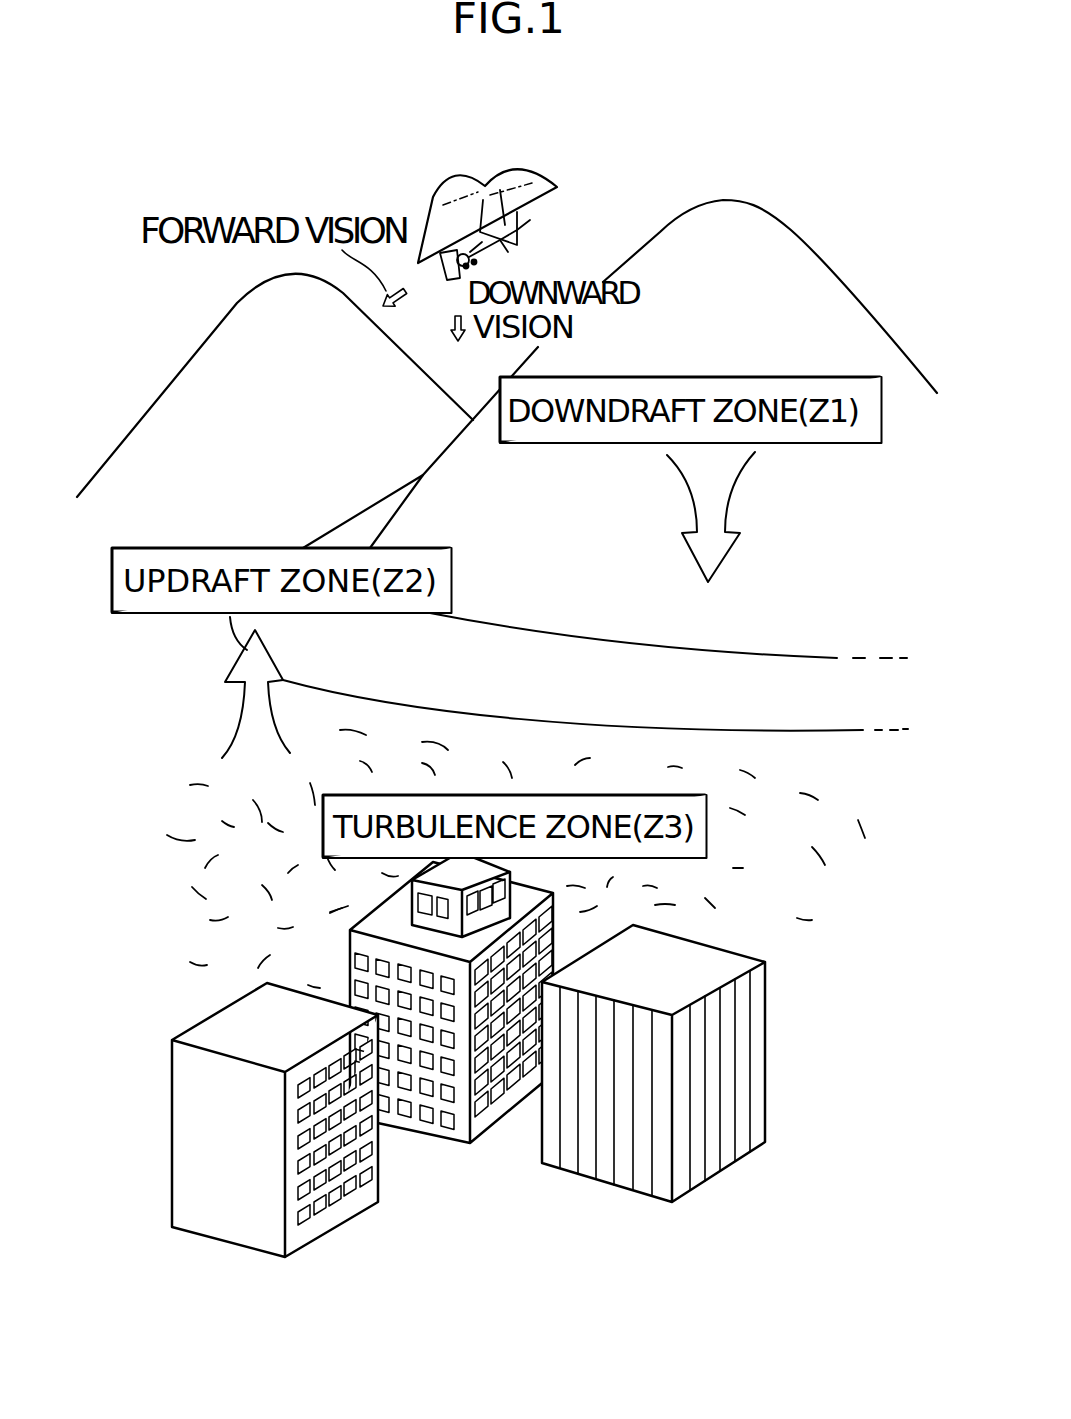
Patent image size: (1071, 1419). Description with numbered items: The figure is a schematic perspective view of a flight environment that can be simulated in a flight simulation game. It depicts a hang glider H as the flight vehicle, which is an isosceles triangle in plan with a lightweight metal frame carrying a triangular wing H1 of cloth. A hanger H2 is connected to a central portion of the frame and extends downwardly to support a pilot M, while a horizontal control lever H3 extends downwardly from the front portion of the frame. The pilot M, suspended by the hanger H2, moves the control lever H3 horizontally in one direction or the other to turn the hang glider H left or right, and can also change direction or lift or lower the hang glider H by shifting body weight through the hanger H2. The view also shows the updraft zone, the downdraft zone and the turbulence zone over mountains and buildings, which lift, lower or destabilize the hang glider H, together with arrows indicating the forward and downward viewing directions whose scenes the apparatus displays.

The hang glider H is at (488, 172).
The triangular wing H1 is at (440, 208).
The hanger H2 is at (523, 218).
The horizontal control lever H3 is at (440, 267).
The pilot M is at (487, 256).